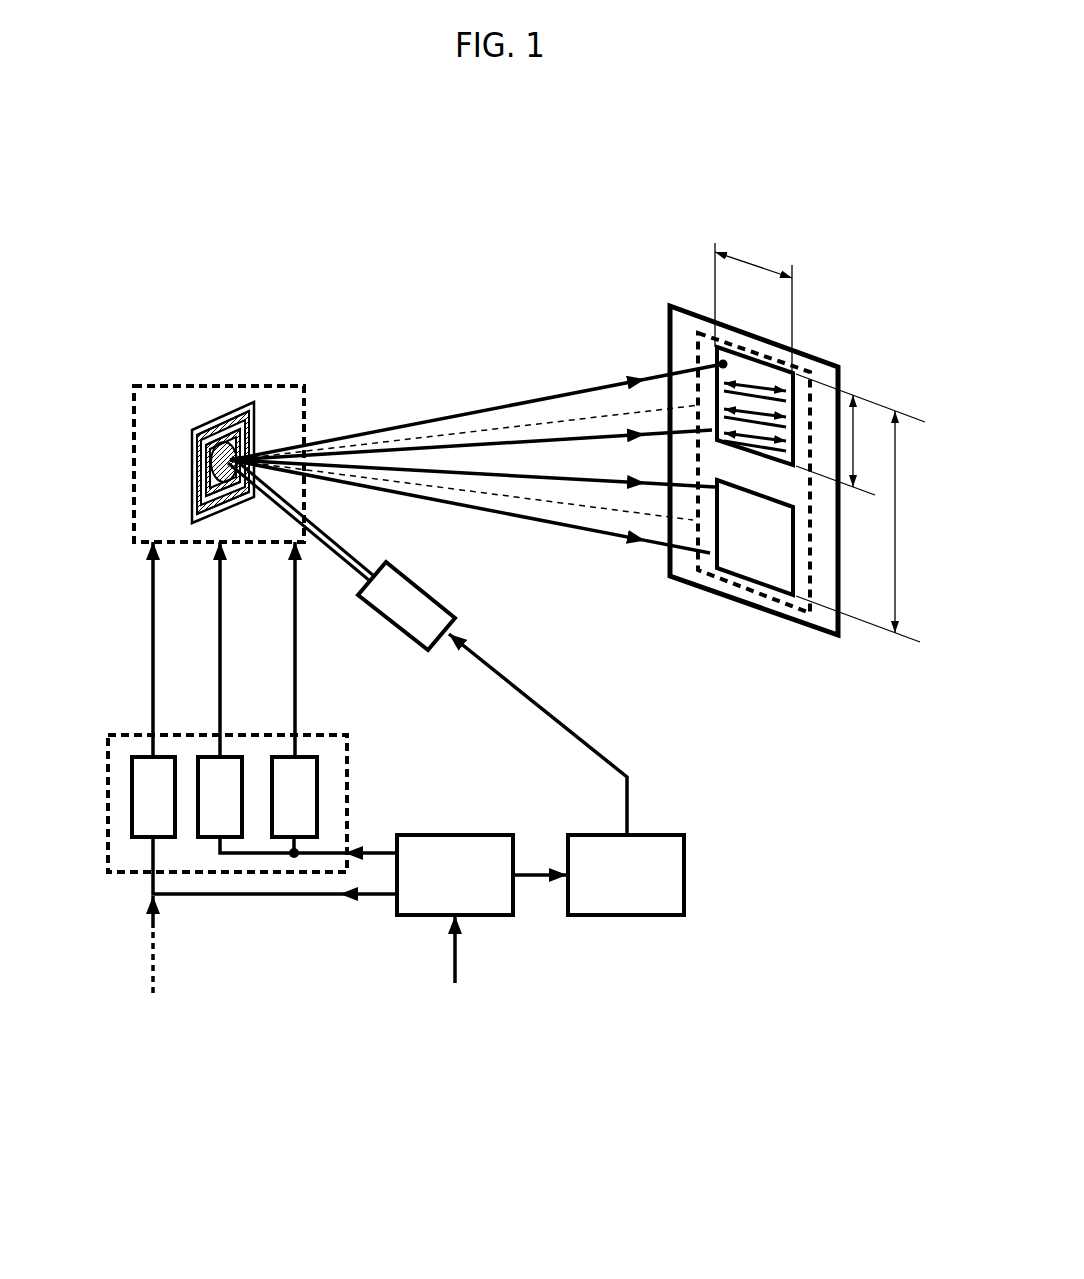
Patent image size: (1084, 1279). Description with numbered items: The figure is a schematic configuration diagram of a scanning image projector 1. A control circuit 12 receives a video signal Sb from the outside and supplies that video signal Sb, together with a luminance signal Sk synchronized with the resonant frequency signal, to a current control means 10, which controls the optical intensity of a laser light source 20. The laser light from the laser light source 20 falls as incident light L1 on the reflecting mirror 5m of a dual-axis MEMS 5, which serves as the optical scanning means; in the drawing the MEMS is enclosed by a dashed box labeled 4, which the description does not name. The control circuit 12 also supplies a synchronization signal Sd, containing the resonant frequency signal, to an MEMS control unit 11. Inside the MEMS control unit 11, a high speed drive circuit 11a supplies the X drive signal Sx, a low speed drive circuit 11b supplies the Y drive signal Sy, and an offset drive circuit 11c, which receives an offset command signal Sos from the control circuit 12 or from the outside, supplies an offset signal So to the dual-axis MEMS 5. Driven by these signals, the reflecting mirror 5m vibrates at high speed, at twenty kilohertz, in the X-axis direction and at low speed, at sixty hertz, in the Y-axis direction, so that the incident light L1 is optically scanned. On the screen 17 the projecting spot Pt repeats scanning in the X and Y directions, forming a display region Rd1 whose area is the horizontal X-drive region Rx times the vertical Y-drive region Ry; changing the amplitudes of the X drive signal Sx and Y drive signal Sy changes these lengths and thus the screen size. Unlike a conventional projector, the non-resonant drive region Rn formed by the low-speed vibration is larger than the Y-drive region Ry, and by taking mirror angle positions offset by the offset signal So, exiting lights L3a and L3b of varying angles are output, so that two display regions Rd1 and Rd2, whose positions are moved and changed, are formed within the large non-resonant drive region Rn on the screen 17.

The scanning image projector 1 is at (272, 168).
The scanner unit 4 is at (152, 386).
The dual-axis MEMS 5 is at (213, 418).
The reflecting mirror 5m is at (258, 405).
The exiting light L3a is at (390, 420).
The exiting light L3b is at (565, 532).
The incident light L1 is at (340, 540).
The laser light source 20 is at (412, 605).
The screen 17 is at (680, 568).
The projecting spot Pt is at (670, 367).
The display region Rd1 is at (717, 370).
The display region Rd2 is at (767, 557).
The X-drive region Rx is at (753, 297).
The Y-drive region Ry is at (860, 434).
The non-resonant drive region Rn is at (864, 526).
The MEMS control unit 11 is at (108, 810).
The high speed drive circuit 11a is at (302, 793).
The low speed drive circuit 11b is at (222, 802).
The offset drive circuit 11c is at (153, 802).
The offset signal So is at (153, 655).
The X drive signal Sx is at (295, 613).
The Y drive signal Sy is at (220, 630).
The synchronization signal Sd is at (380, 850).
The offset command signal Sos is at (373, 893).
The control circuit 12 is at (475, 857).
The video signal Sb is at (454, 971).
The luminance signal Sk is at (530, 878).
The current control means 10 is at (650, 878).